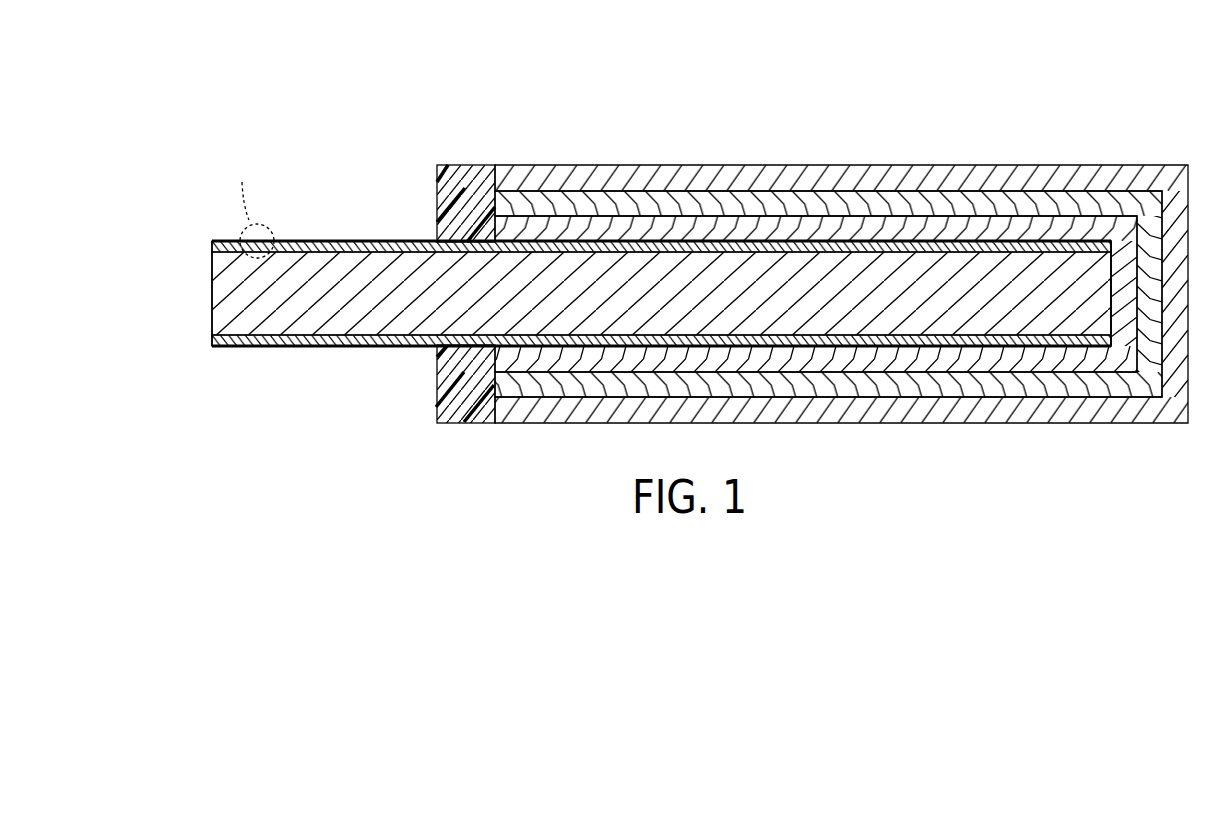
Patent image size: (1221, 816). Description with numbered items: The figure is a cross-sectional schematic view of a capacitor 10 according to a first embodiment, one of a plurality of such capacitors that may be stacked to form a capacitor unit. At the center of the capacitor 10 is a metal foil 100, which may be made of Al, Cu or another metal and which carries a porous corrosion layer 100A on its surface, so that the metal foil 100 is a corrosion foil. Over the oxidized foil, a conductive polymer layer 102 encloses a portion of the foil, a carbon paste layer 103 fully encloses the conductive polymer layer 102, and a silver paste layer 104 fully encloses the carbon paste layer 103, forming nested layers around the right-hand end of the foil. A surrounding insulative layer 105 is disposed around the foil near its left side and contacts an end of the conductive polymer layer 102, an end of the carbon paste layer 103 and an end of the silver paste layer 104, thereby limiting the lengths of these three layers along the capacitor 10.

The capacitor 10 is at (251, 52).
The metal foil 100 is at (614, 262).
The porous corrosion layer 100A is at (366, 248).
The conductive polymer layer 102 is at (913, 221).
The carbon paste layer 103 is at (784, 197).
The silver paste layer 104 is at (1033, 167).
The surrounding insulative layer 105 is at (462, 165).